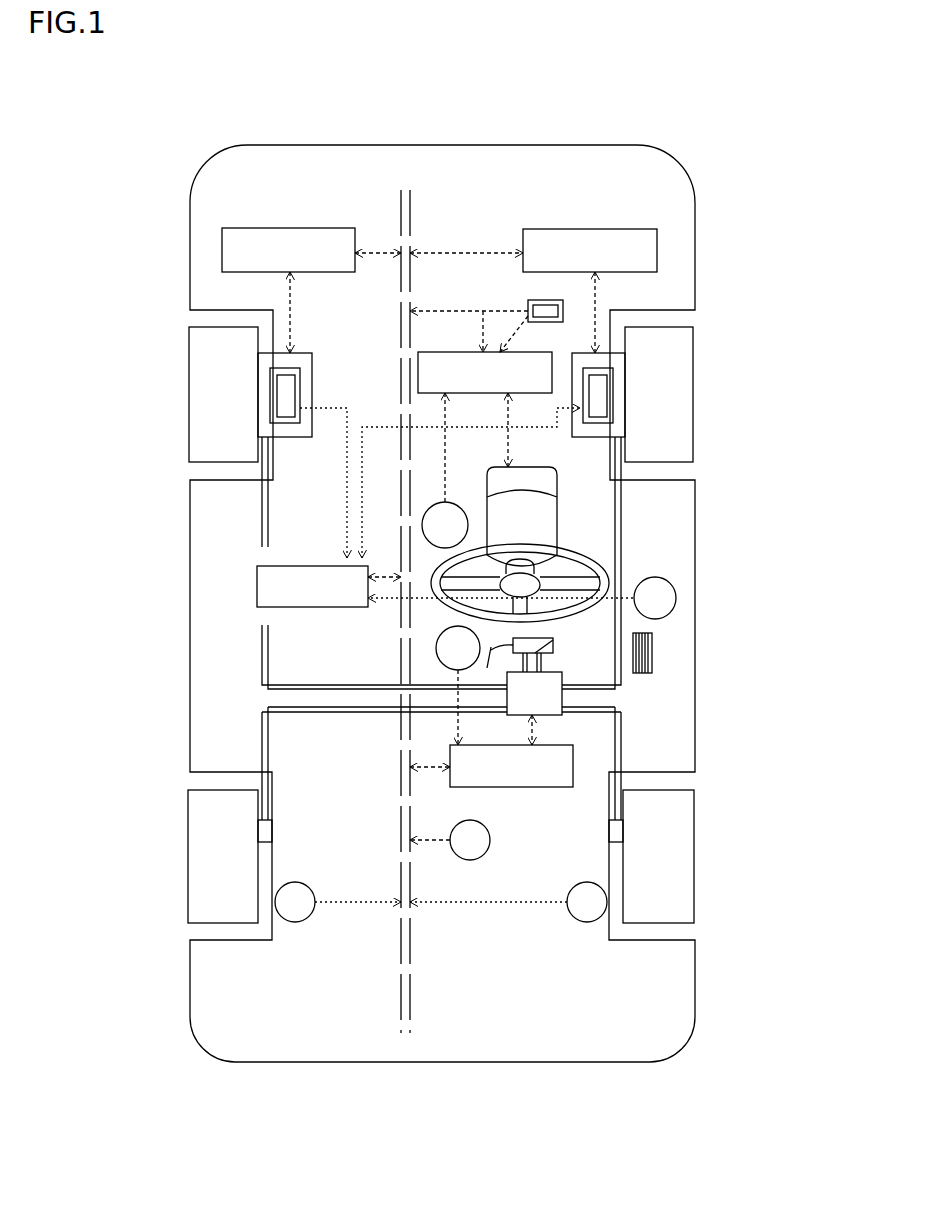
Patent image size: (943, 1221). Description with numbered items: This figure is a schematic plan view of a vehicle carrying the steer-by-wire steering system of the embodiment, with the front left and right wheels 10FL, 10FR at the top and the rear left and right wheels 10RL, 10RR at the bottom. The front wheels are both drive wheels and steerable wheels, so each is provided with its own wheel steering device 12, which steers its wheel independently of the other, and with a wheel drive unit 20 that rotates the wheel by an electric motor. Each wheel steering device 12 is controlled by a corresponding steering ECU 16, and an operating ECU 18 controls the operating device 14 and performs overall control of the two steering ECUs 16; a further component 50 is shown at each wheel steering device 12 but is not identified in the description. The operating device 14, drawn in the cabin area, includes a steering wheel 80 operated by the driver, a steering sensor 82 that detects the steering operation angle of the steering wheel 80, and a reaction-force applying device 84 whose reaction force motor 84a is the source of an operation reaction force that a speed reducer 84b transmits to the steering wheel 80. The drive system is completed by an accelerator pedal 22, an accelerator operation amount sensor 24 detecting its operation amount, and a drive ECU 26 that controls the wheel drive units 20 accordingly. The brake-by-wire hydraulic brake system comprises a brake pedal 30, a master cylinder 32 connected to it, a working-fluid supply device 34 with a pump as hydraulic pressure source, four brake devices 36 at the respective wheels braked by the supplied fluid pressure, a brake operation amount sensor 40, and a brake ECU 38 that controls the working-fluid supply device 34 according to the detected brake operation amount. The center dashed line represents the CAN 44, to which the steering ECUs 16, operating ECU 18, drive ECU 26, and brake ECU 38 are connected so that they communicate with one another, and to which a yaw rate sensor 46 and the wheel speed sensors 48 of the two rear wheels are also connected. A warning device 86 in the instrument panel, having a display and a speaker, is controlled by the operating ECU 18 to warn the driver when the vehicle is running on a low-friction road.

The front left wheel 10FL is at (207, 353).
The front right wheel 10FR is at (678, 353).
The rear left wheel 10RL is at (208, 897).
The rear right wheel 10RR is at (675, 912).
The wheel steering device 12 is at (262, 376).
The operating device 14 is at (597, 534).
The steering electronic control unit 16 is at (222, 257).
The operating electronic control unit 18 is at (418, 372).
The wheel drive unit 20 is at (282, 396).
The accelerator pedal 22 is at (652, 665).
The accelerator operation amount sensor 24 is at (668, 613).
The vehicle drive electronic control unit 26 is at (257, 585).
The brake pedal 30 is at (548, 638).
The master cylinder 32 is at (543, 662).
The working-fluid supply device 34 is at (548, 708).
The brake device 36 is at (260, 428).
The brake electronic control unit 38 is at (540, 787).
The brake operation amount sensor 40 is at (436, 648).
The CAN 44 is at (410, 882).
The yaw rate sensor 46 is at (490, 840).
The wheel speed sensor 48 is at (296, 882).
The steering angle sensor 50 is at (252, 408).
The steering wheel 80 is at (596, 560).
The steering sensor 82 is at (452, 503).
The reaction-force applying device 84 is at (615, 506).
The reaction force motor 84a is at (537, 478).
The speed reducer 84b is at (540, 525).
The warning device 86 is at (533, 300).